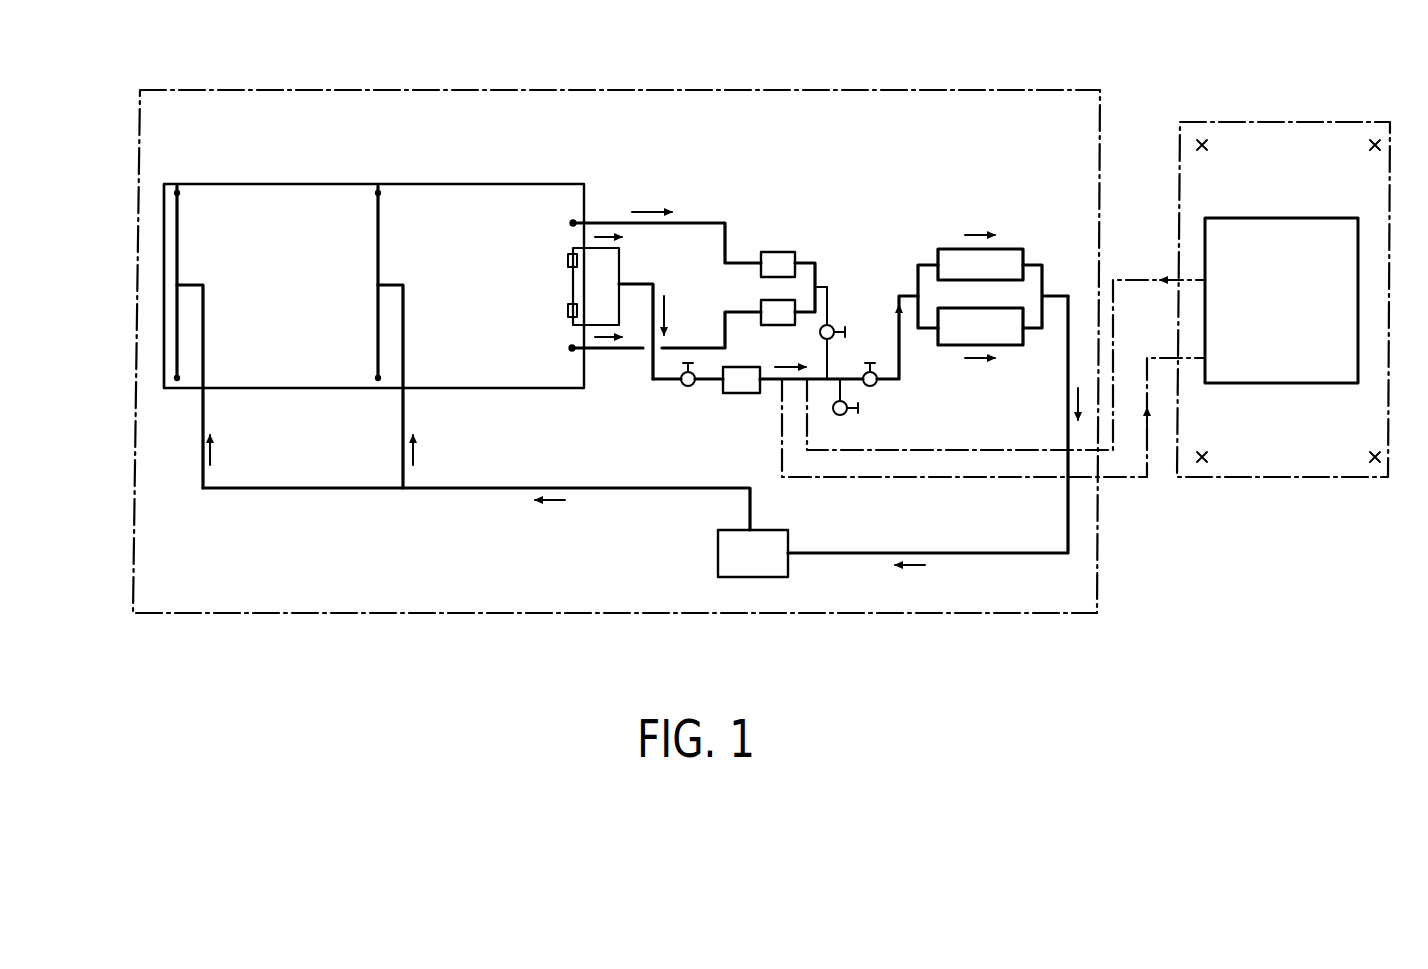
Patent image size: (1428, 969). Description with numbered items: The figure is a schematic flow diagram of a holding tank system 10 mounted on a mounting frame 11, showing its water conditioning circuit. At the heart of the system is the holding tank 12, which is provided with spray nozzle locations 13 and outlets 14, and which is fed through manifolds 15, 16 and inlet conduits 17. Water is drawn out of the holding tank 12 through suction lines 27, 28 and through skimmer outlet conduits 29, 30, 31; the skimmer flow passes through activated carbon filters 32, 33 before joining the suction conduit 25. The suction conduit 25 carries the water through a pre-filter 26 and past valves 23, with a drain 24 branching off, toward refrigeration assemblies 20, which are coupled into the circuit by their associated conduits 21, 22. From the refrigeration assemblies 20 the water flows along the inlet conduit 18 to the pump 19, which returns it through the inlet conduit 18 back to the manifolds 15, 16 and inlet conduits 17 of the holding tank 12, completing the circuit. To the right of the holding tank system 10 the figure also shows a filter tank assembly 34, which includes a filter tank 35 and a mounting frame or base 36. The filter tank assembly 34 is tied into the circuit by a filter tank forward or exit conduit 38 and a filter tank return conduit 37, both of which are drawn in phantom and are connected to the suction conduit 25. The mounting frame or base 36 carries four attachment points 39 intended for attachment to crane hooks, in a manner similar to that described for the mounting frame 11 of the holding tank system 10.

The holding tank system 10 is at (398, 622).
The mounting frame 11 is at (702, 90).
The holding tank 12 is at (374, 286).
The spray nozzle locations 13 is at (182, 185).
The outlets 14 is at (566, 260).
The manifold 15 is at (177, 222).
The manifold 16 is at (375, 222).
The inlet conduits 17 is at (203, 340).
The inlet conduit 18 is at (468, 490).
The pump 19 is at (753, 553).
The refrigeration assemblies 20 is at (1003, 262).
The conduit 21 is at (922, 262).
The conduit 22 is at (1047, 285).
The valves 23 is at (686, 388).
The drain 24 is at (847, 414).
The suction conduit 25 is at (651, 372).
The pre-filter 26 is at (742, 393).
The suction line 27 is at (619, 262).
The suction line 28 is at (573, 330).
The skimmer outlet conduit 29 is at (703, 223).
The skimmer outlet conduit 30 is at (688, 348).
The skimmer outlet conduit 31 is at (818, 287).
The activated carbon filter 32 is at (778, 252).
The activated carbon filter 33 is at (776, 325).
The filter tank assembly 34 is at (1410, 120).
The filter tank 35 is at (1281, 300).
The mounting frame or base 36 is at (1360, 192).
The filter tank return conduit 37 is at (1128, 480).
The filter tank forward or exit conduit 38 is at (1125, 278).
The attachment points 39 is at (1372, 462).